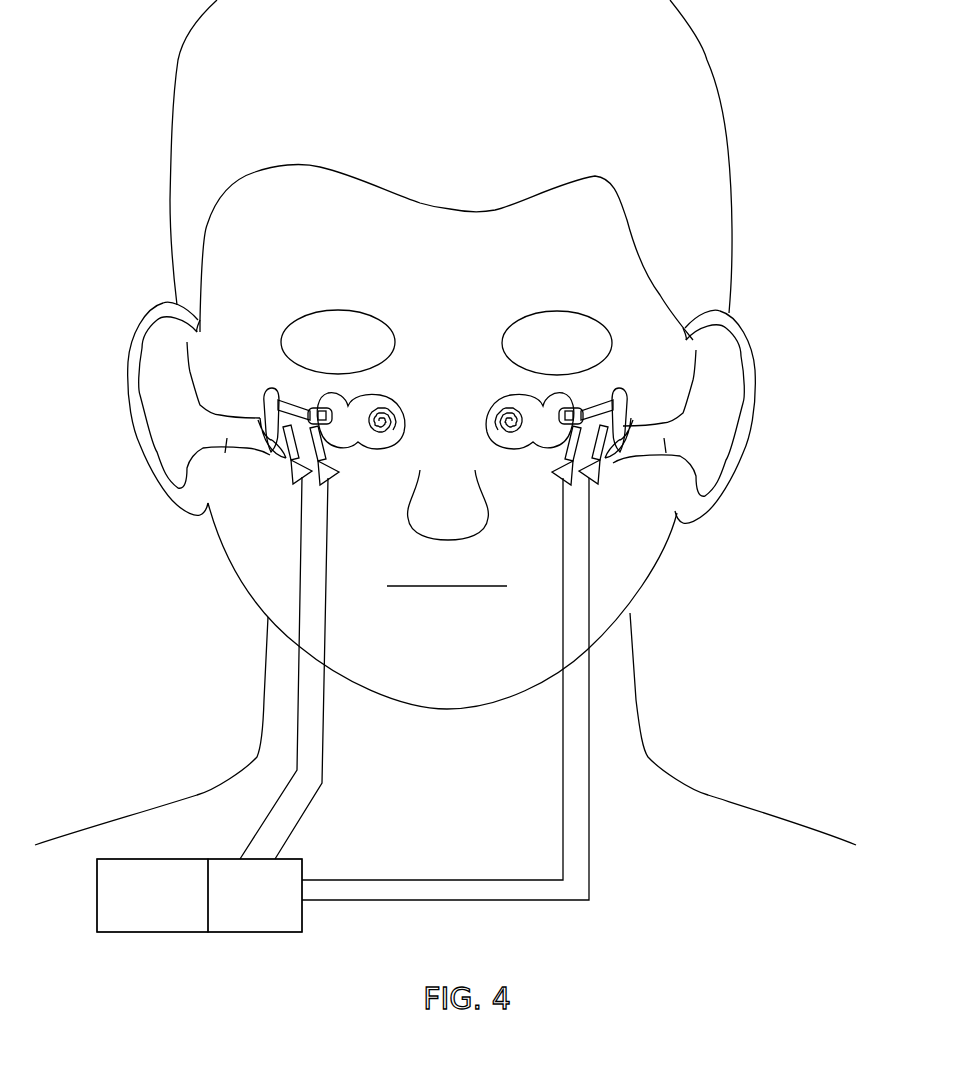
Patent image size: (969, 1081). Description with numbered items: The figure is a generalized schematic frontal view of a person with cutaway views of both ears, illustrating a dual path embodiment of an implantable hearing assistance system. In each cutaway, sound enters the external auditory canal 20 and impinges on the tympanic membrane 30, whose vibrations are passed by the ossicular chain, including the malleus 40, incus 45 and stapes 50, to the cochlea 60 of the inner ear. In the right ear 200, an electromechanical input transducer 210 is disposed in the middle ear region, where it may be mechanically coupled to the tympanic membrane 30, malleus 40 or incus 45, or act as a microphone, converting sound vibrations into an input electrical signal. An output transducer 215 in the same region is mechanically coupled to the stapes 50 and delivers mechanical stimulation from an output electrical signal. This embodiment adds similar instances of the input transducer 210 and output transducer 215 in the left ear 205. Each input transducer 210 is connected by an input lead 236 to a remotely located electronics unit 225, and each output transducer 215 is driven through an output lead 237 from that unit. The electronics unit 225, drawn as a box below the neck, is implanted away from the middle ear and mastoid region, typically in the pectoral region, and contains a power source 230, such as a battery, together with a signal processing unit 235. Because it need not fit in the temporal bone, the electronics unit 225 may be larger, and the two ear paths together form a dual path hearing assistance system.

The right ear 200 is at (125, 310).
The left ear 205 is at (762, 330).
The external auditory canal 20 is at (442, 463).
The tympanic membrane 30 is at (272, 443).
The malleus 40 is at (266, 402).
The incus 45 is at (280, 393).
The stapes 50 is at (310, 408).
The cochlea 60 is at (404, 403).
The input transducer 210 is at (291, 476).
The output transducer 215 is at (330, 457).
The electronics unit 225 is at (312, 919).
The power source 230 is at (163, 932).
The signal processing unit 235 is at (256, 932).
The input lead 236 is at (268, 812).
The output lead 237 is at (308, 816).